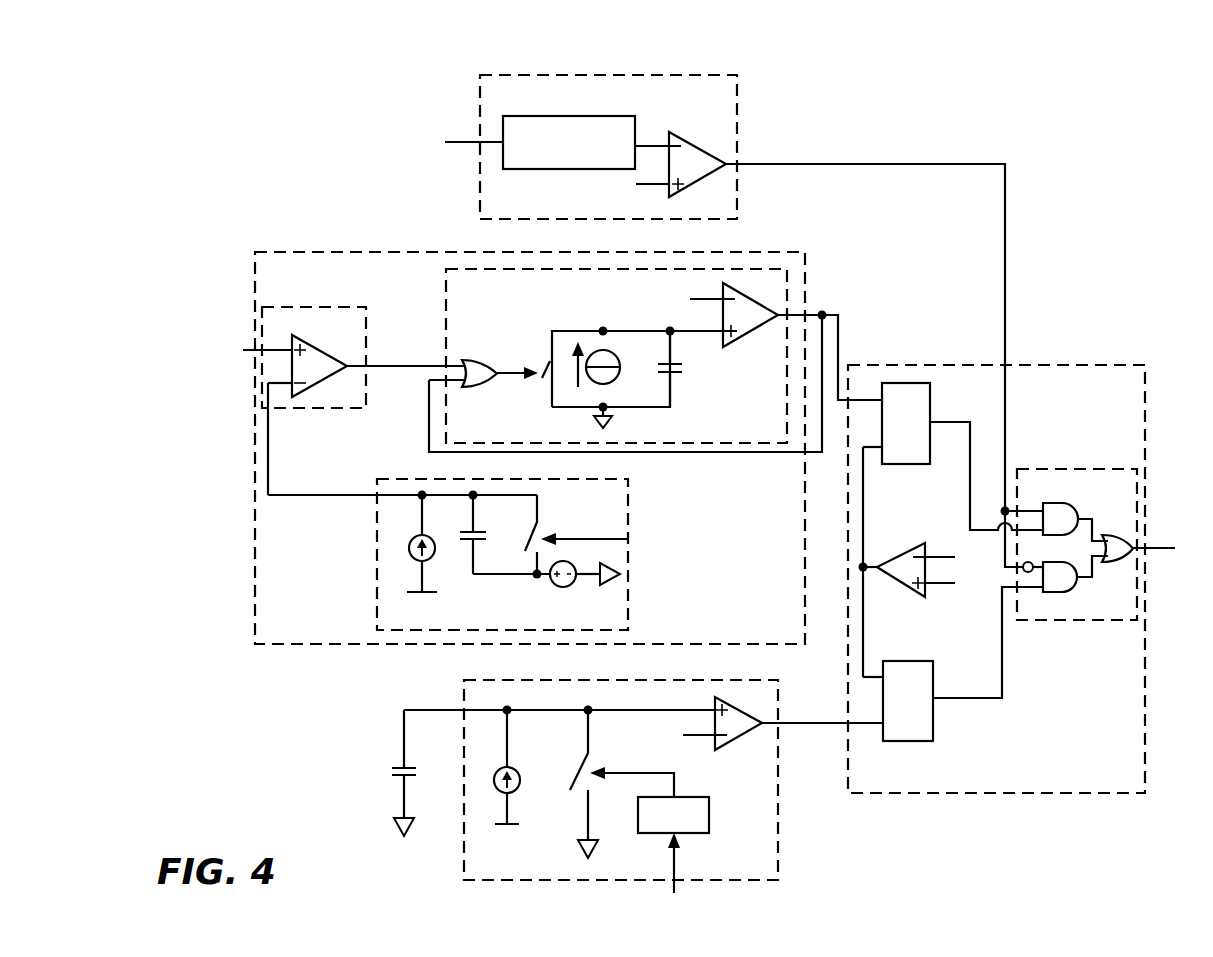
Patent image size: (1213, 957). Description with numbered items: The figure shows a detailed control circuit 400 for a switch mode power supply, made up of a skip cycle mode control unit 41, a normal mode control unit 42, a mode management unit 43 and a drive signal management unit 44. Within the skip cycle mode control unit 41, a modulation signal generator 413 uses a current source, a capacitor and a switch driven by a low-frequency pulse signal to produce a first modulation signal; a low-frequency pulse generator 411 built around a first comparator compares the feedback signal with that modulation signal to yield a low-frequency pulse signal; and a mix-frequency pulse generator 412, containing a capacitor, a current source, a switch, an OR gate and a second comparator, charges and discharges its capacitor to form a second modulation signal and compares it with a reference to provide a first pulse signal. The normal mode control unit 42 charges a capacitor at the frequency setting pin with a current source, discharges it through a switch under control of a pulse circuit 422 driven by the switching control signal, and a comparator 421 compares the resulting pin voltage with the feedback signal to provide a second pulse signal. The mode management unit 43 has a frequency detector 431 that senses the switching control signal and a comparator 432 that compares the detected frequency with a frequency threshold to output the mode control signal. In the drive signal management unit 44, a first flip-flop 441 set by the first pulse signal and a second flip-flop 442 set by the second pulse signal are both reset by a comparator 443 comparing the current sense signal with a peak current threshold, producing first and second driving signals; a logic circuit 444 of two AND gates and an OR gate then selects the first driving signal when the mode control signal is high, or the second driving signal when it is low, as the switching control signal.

The control circuit 400 is at (898, 67).
The skip cycle mode control unit 41 is at (805, 252).
The low-frequency pulse generator 411 is at (307, 307).
The mix-frequency pulse generator 412 is at (447, 296).
The modulation signal generator 413 is at (382, 479).
The normal mode control unit 42 is at (778, 831).
The comparator 421 is at (718, 744).
The pulse circuit 422 is at (673, 815).
The mode management unit 43 is at (737, 91).
The frequency detector 431 is at (530, 116).
The comparator 432 is at (679, 133).
The drive signal management unit 44 is at (1055, 365).
The flip-flop 441 is at (900, 464).
The flip-flop 442 is at (930, 741).
The comparator 443 is at (925, 597).
The logic circuit 444 is at (1040, 469).